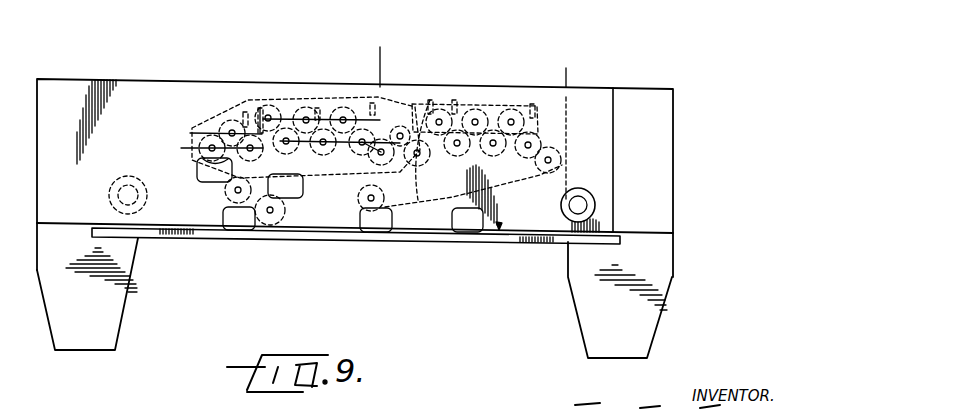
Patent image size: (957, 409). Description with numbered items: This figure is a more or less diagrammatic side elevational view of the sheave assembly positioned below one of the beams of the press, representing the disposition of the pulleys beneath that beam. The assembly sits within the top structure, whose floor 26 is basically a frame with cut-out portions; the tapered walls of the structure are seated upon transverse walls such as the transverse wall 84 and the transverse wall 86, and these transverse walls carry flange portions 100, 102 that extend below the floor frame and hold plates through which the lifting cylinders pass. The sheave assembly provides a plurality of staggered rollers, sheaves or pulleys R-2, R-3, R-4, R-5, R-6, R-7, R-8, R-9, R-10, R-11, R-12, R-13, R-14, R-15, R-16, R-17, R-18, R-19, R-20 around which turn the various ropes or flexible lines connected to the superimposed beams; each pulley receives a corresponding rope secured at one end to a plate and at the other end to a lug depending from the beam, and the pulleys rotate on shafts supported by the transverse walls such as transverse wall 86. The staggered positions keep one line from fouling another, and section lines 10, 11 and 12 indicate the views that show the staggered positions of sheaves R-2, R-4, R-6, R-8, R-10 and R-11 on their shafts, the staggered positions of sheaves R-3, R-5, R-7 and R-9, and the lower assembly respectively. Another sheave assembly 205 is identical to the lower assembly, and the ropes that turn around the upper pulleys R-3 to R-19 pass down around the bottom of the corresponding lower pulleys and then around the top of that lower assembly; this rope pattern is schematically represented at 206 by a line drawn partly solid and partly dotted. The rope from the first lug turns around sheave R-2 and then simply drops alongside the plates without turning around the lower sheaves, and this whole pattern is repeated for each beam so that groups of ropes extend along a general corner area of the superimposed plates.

The transverse wall 84 is at (610, 95).
The transverse wall 86 is at (665, 147).
The floor 26 is at (552, 247).
The flange portion 100 is at (88, 328).
The flange portion 102 is at (643, 327).
The sheave assembly 205 is at (375, 216).
The rope pattern 206 is at (256, 256).
The section line 10- 10 is at (285, 182).
The section line 11- 11 is at (181, 170).
The section line 12- 12 is at (235, 190).
The pulley R-2 is at (194, 140).
The pulley R-3 is at (229, 130).
The pulley R-4 is at (224, 190).
The pulley R-5 is at (278, 108).
The pulley R-6 is at (290, 235).
The pulley R-7 is at (336, 62).
The pulley R-8 is at (288, 243).
The pulley R-9 is at (347, 113).
The pulley R-10 is at (362, 100).
The pulley R-11 is at (368, 178).
The pulley R-12 is at (413, 97).
The pulley R-13 is at (421, 264).
The pulley R-14 is at (450, 100).
The pulley R-15 is at (500, 235).
The pulley R-16 is at (480, 100).
The pulley R-17 is at (505, 192).
The pulley R-18 is at (507, 98).
The pulley R-19 is at (548, 128).
The pulley R-20 is at (556, 166).